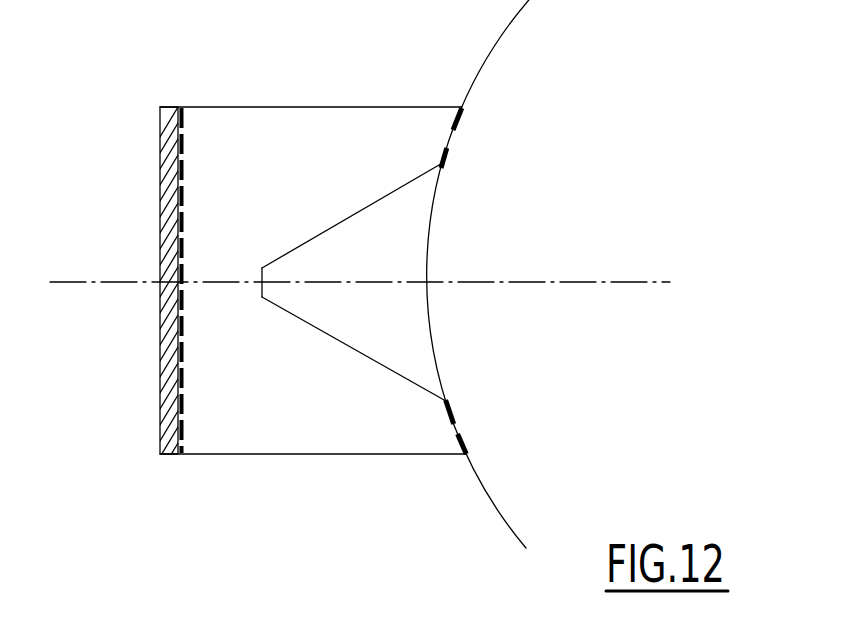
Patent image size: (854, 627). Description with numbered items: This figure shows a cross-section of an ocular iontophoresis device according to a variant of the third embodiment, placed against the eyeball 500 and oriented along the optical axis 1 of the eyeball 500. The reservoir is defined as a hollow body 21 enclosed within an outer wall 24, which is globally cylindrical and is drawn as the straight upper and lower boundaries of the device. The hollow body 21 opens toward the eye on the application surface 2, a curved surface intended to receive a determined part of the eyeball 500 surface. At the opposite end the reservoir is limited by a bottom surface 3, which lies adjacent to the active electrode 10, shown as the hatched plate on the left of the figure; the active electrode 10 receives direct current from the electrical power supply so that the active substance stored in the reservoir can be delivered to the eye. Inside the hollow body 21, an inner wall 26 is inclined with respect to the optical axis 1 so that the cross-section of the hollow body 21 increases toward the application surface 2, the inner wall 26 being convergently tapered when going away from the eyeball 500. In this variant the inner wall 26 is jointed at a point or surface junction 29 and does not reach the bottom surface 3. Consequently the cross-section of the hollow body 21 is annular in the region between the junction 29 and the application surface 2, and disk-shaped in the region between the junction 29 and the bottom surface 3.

The optical axis 1 is at (77, 281).
The application surface 2 is at (459, 122).
The bottom surface 3 is at (186, 147).
The active electrode 10 is at (169, 191).
The hollow body 21 is at (273, 153).
The outer wall 24 is at (350, 107).
The inner wall 26 is at (353, 217).
The point or surface junction 29 is at (256, 270).
The eyeball 500 is at (561, 224).